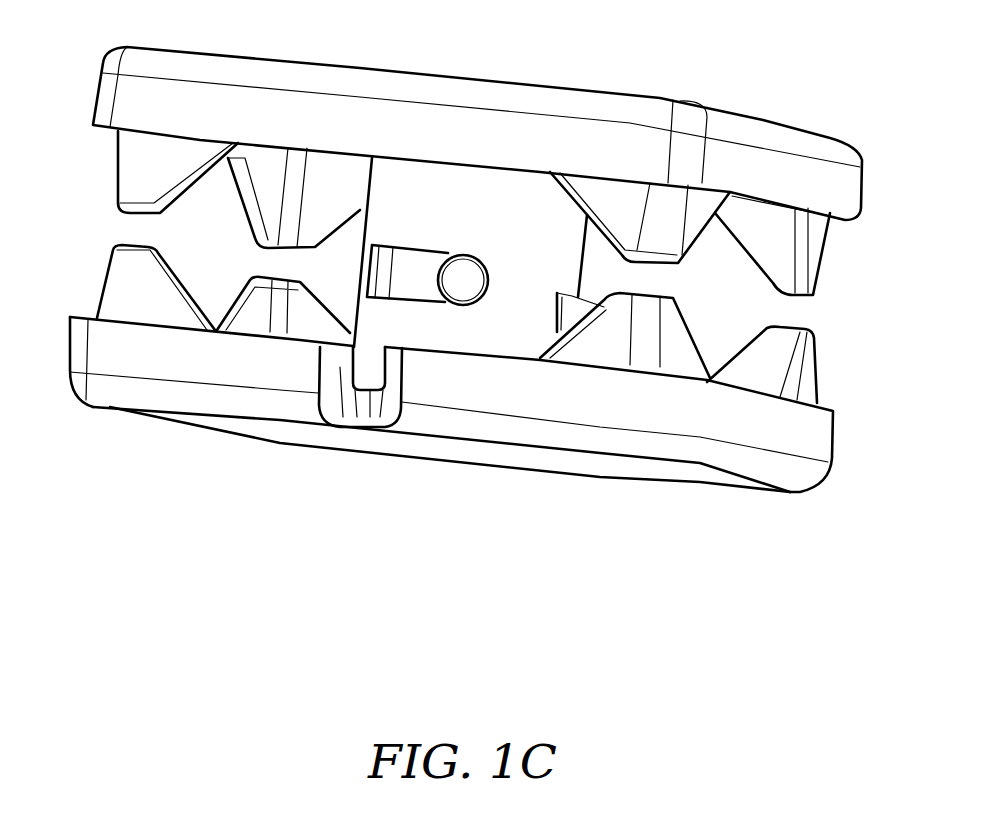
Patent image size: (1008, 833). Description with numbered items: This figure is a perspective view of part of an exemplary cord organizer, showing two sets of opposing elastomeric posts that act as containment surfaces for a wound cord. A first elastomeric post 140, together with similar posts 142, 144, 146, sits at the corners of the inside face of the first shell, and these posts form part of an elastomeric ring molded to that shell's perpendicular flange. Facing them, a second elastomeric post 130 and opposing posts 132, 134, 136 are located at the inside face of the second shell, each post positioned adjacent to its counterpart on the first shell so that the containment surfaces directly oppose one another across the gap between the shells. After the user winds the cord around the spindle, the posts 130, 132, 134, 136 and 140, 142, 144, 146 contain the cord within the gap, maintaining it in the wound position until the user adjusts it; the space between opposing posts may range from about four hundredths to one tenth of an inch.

The second elastomeric post 130 is at (630, 202).
The elastomeric post 132 is at (133, 162).
The elastomeric post 134 is at (818, 255).
The elastomeric post 136 is at (272, 202).
The first elastomeric post 140 is at (648, 353).
The elastomeric post 142 is at (122, 288).
The elastomeric post 144 is at (803, 380).
The elastomeric post 146 is at (250, 318).